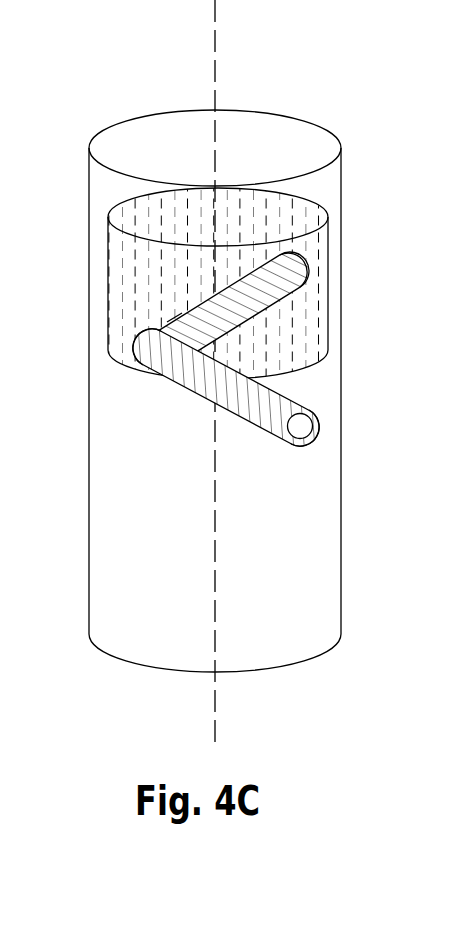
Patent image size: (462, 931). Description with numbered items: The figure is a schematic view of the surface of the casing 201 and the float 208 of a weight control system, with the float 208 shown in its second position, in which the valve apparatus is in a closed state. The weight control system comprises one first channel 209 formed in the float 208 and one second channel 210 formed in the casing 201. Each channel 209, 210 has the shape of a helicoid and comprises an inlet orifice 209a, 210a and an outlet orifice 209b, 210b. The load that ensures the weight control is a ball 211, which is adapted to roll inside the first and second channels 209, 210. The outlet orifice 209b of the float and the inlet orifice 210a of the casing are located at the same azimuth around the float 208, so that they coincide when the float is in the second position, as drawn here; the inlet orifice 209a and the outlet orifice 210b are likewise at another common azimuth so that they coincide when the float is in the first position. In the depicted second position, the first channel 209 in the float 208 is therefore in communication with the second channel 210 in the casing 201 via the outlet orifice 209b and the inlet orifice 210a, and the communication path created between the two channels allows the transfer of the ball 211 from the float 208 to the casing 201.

The casing 201 is at (150, 575).
The float 208 is at (180, 217).
The first channel 209 is at (200, 290).
The inlet orifice 209a is at (292, 266).
The outlet orifice 209b is at (138, 339).
The second channel 210 is at (193, 392).
The inlet orifice 210a is at (157, 337).
The outlet orifice 210b is at (262, 427).
The ball 211 is at (304, 429).